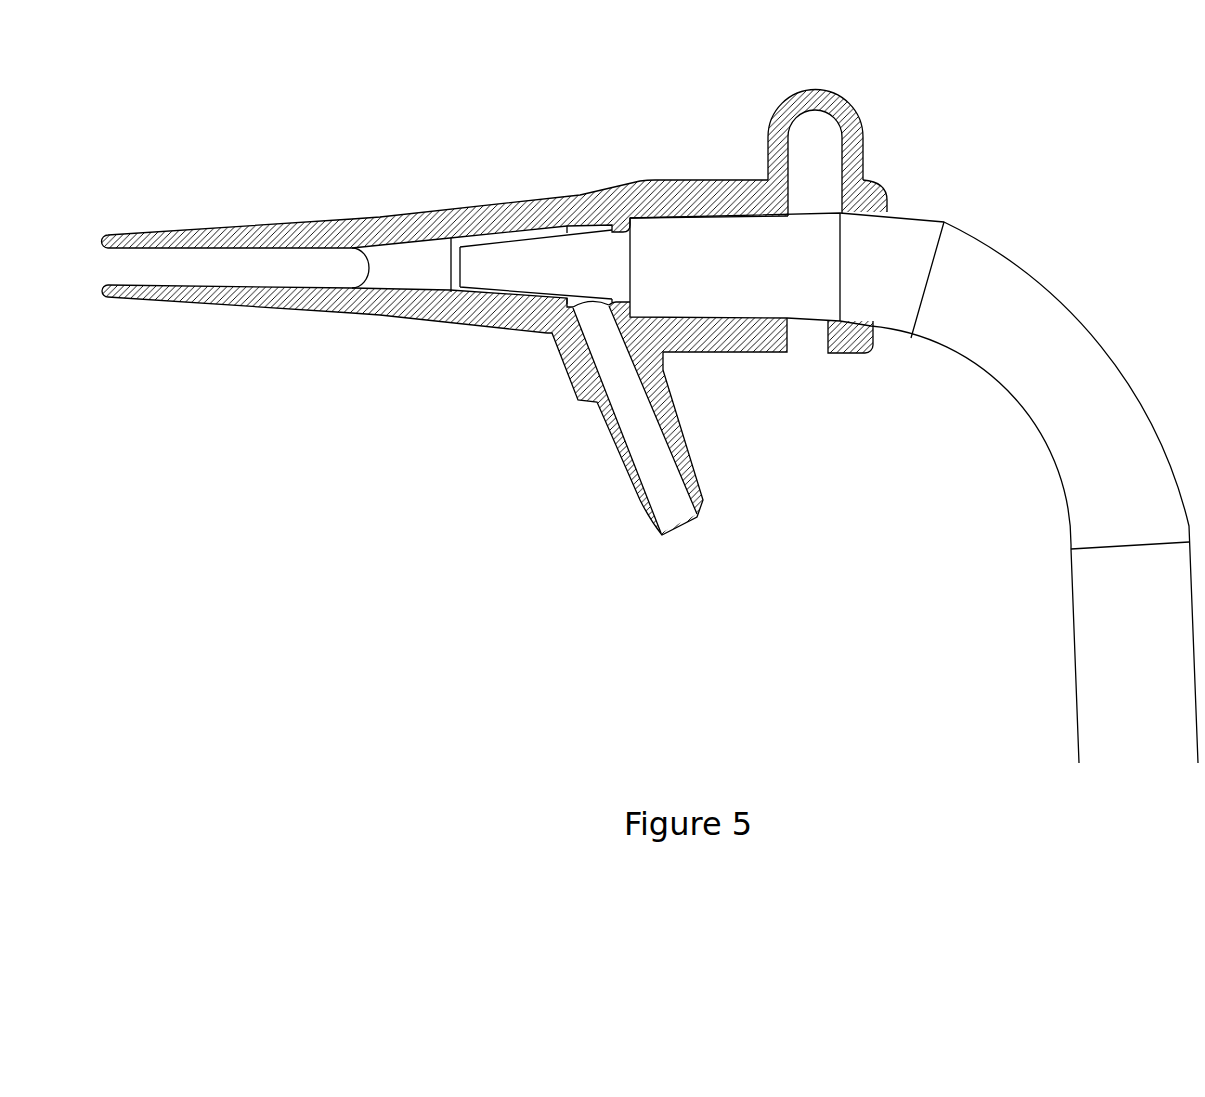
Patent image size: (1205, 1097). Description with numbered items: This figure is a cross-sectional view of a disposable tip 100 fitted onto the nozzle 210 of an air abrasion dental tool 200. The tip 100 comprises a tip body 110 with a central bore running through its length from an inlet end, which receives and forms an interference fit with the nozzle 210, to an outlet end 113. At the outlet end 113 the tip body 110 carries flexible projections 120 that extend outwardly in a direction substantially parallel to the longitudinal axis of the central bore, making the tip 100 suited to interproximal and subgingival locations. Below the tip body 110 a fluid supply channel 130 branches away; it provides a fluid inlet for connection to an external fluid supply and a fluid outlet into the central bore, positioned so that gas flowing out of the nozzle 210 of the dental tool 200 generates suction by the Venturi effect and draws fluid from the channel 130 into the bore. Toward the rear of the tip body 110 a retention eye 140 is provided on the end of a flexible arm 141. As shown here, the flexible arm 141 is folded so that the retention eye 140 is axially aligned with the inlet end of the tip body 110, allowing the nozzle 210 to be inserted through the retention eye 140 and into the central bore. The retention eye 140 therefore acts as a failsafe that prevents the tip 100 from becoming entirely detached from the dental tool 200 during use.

The tip 100 is at (408, 125).
The tip body 110 is at (653, 193).
The outlet end 113 is at (380, 268).
The flexible projection 120 is at (213, 290).
The fluid supply channel 130 is at (652, 500).
The retention eye 140 is at (857, 188).
The flexible arm 141 is at (833, 102).
The air abrasion dental tool 200 is at (1100, 245).
The nozzle 210 is at (595, 272).